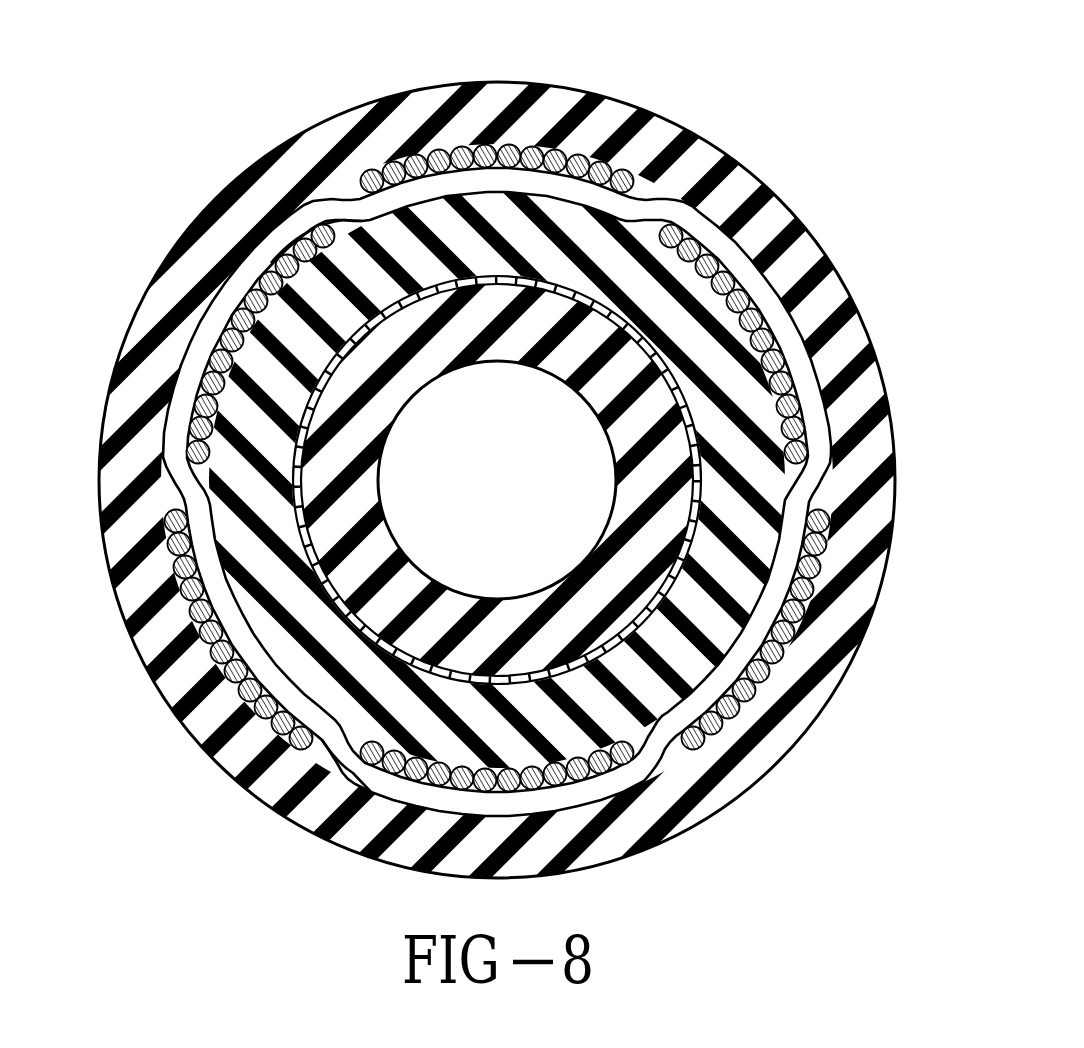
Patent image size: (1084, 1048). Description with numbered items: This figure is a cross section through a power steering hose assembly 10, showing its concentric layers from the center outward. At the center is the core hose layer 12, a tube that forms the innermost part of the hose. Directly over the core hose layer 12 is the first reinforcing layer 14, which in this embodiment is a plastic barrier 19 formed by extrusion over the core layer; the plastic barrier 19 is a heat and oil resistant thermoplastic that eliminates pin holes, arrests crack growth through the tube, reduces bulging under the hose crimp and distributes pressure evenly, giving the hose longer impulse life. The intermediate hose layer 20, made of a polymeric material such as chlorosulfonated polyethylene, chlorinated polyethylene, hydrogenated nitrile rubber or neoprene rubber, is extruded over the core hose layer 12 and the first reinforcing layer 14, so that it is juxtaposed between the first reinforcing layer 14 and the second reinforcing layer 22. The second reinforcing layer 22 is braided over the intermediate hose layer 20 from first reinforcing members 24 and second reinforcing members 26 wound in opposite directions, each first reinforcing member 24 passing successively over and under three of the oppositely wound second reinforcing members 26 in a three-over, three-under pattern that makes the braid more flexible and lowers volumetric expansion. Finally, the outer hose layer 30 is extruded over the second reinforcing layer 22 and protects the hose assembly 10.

The power steering hose assembly 10 is at (150, 124).
The core hose layer 12 is at (637, 420).
The first reinforcing layer 14 is at (548, 276).
The plastic barrier 19 is at (365, 228).
The intermediate hose layer 20 is at (765, 482).
The second reinforcing layer 22 is at (355, 787).
The first reinforcing members 24 is at (243, 300).
The second reinforcing members 26 is at (762, 286).
The outer hose layer 30 is at (697, 163).